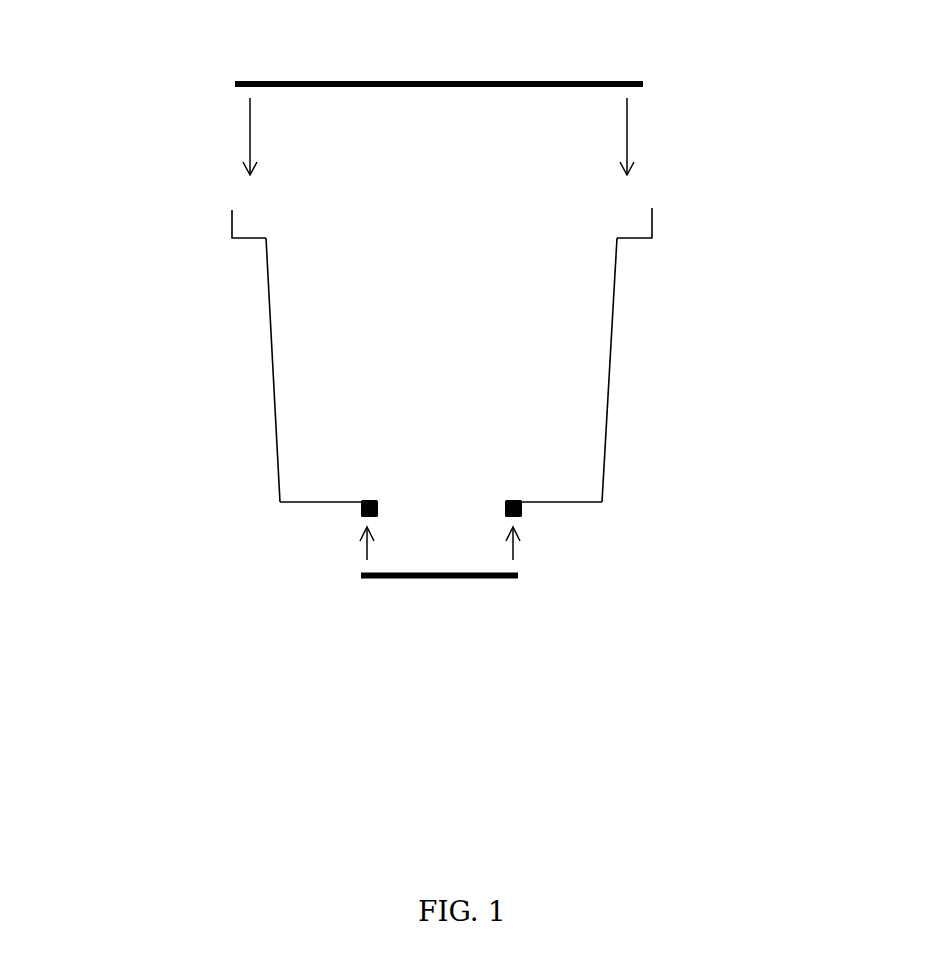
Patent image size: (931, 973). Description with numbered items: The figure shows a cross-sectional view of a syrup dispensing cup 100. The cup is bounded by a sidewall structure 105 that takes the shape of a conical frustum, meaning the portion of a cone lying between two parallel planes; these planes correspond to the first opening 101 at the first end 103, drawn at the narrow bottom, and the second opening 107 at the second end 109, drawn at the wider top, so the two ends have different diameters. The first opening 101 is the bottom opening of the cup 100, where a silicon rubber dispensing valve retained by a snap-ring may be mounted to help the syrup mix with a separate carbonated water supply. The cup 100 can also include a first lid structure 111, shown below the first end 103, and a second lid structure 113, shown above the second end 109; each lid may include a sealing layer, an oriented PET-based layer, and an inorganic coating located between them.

The syrup dispensing cup 100 is at (192, 111).
The first opening 101 is at (455, 516).
The first end 103 is at (570, 504).
The sidewall structure 105 is at (608, 372).
The second opening 107 is at (459, 231).
The second end 109 is at (652, 208).
The first lid structure 111 is at (460, 578).
The second lid structure 113 is at (522, 81).